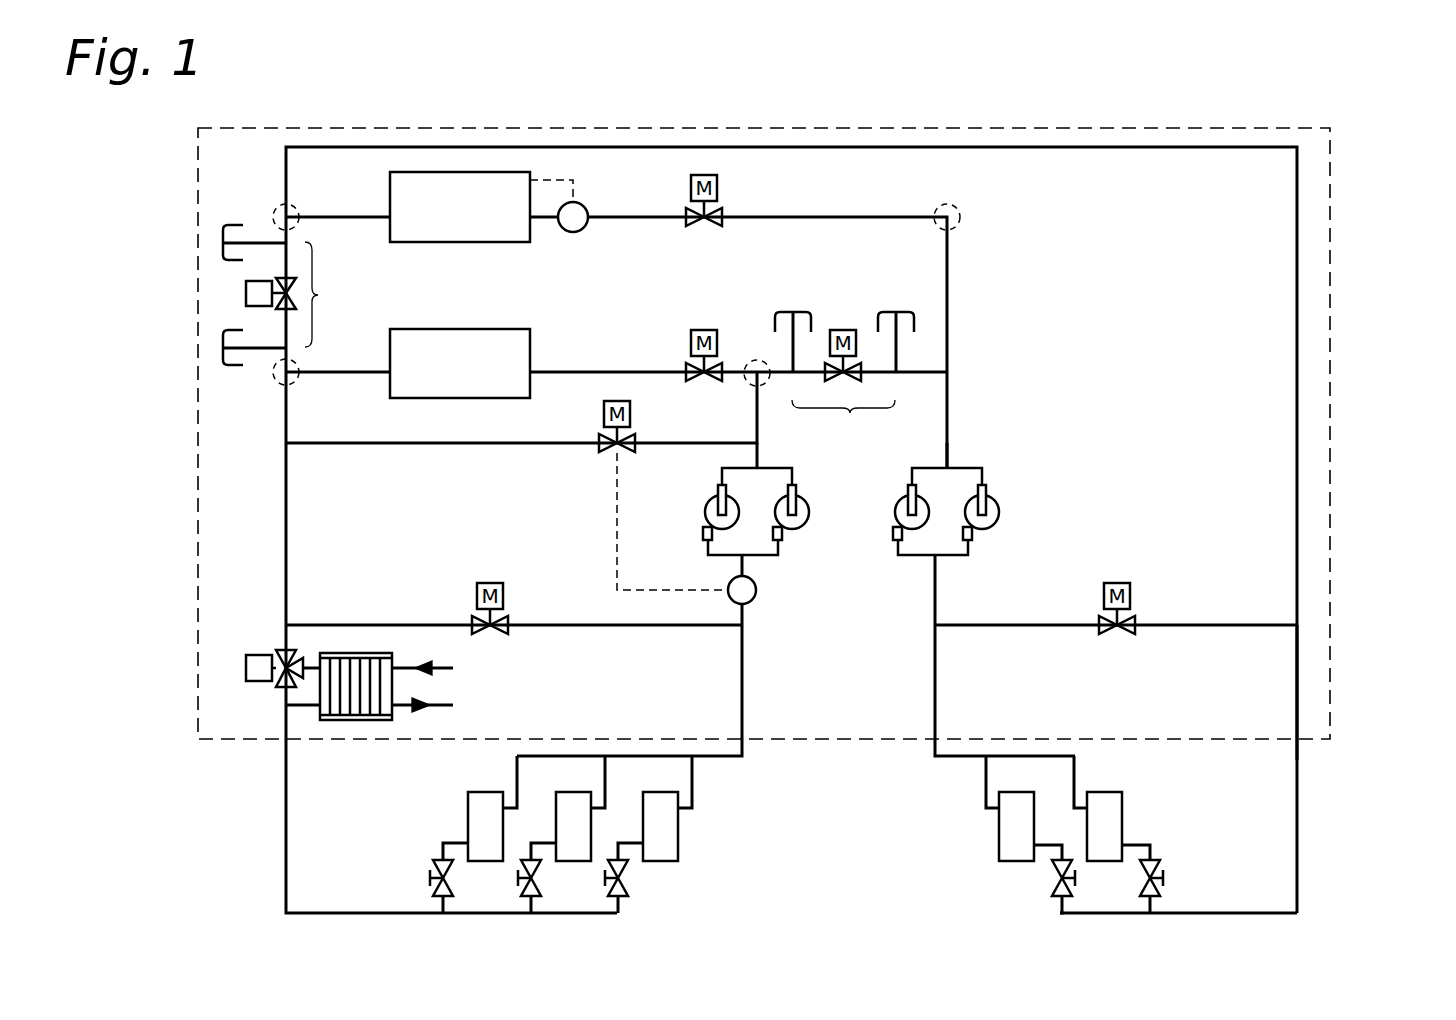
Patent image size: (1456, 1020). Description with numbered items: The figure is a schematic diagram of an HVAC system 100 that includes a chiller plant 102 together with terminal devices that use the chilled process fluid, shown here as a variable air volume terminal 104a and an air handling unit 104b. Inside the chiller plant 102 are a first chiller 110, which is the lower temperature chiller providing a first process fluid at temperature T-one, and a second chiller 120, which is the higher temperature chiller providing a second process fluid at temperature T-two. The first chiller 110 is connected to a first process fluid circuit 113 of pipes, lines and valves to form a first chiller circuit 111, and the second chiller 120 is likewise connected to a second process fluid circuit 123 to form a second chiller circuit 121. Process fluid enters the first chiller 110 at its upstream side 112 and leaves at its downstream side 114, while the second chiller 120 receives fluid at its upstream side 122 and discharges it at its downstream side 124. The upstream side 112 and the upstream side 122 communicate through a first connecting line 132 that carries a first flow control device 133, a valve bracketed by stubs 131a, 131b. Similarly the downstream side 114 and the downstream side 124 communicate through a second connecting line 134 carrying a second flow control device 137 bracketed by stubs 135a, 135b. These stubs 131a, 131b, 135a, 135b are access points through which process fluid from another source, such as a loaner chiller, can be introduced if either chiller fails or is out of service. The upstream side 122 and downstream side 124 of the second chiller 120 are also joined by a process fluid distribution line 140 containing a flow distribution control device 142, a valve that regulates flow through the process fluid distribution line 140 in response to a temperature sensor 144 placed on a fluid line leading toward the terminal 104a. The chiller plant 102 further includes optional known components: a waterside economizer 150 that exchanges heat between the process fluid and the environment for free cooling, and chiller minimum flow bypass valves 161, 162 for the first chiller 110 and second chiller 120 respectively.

The HVAC system 100 is at (1182, 93).
The chiller plant 102 is at (1335, 185).
The variable air volume (VAV) terminal 104a is at (680, 840).
The air handling unit (AHU) 104b is at (1122, 812).
The first chiller 110 is at (425, 244).
The first chiller circuit 111 is at (1312, 684).
The upstream side of the first chiller 112 is at (292, 207).
The first process fluid circuit 113 is at (653, 147).
The downstream side of the first chiller 114 is at (953, 207).
The second chiller 120 is at (420, 328).
The second chiller circuit 121 is at (768, 656).
The upstream side of the second chiller 122 is at (282, 385).
The second process fluid circuit 123 is at (318, 373).
The downstream side of the second chiller 124 is at (757, 358).
The stub 131a is at (222, 348).
The stub 131b is at (222, 228).
The first connecting line 132 is at (338, 294).
The first flow control device 133 is at (246, 295).
The second connecting line 134 is at (850, 413).
The stub 135a is at (793, 308).
The stub 135b is at (898, 353).
The second flow control device 137 is at (835, 355).
The process fluid distribution line 140 is at (392, 445).
The flow distribution control device 142 is at (633, 415).
The temperature sensor 144 is at (752, 602).
The waterside economizer 150 is at (372, 722).
The chiller minimum flow bypass valve 161 is at (1125, 585).
The chiller minimum flow bypass valve 162 is at (480, 585).